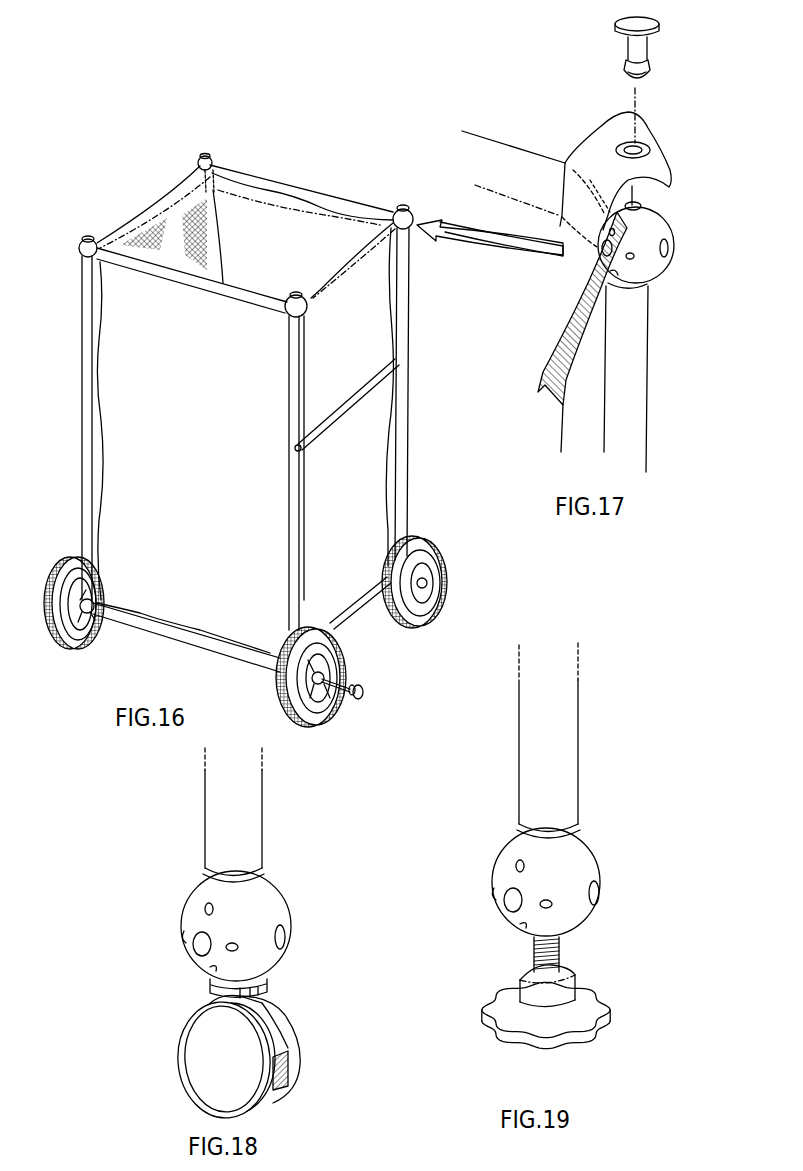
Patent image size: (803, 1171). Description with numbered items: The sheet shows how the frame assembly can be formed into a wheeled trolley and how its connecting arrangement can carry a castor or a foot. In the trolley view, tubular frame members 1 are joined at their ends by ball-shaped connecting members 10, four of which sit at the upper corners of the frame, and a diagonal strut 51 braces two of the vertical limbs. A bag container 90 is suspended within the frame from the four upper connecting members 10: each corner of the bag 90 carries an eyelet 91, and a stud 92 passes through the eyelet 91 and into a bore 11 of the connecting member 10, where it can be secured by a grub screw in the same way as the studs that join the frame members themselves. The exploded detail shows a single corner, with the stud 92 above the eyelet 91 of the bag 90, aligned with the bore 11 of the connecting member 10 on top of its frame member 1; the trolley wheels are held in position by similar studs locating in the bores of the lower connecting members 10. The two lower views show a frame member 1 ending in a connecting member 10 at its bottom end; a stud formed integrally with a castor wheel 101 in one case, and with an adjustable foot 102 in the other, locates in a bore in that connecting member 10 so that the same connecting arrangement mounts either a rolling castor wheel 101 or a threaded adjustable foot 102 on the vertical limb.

In FIG. 16, the frame member 1 is at (223, 287).
In FIG. 18, the frame member 1 is at (250, 815).
In FIG. 19, the frame member 1 is at (565, 730).
In FIG. 18, the connecting member 10 is at (280, 912).
In FIG. 19, the connecting member 10 is at (590, 866).
In FIG. 17, the bore 11 is at (640, 204).
In FIG. 16, the diagonal strut 51 is at (401, 389).
In FIG. 16, the bag container 90 is at (327, 502).
In FIG. 17, the eyelet 91 is at (650, 152).
In FIG. 17, the stud 92 is at (641, 48).
In FIG. 18, the castor wheel 101 is at (288, 1023).
In FIG. 19, the adjustable foot 102 is at (592, 1000).